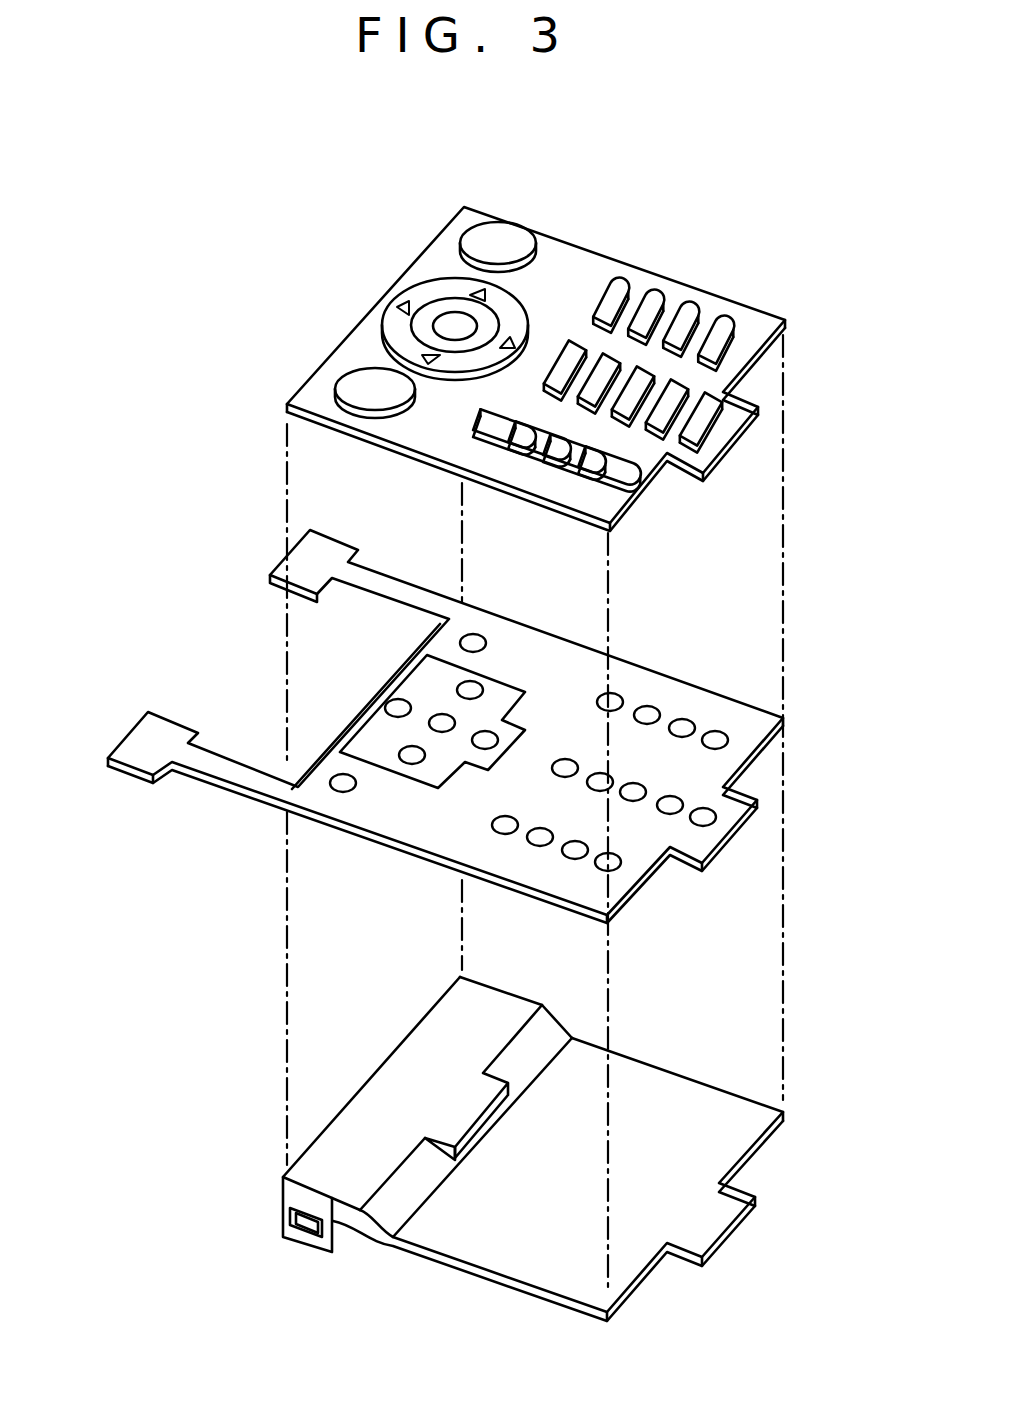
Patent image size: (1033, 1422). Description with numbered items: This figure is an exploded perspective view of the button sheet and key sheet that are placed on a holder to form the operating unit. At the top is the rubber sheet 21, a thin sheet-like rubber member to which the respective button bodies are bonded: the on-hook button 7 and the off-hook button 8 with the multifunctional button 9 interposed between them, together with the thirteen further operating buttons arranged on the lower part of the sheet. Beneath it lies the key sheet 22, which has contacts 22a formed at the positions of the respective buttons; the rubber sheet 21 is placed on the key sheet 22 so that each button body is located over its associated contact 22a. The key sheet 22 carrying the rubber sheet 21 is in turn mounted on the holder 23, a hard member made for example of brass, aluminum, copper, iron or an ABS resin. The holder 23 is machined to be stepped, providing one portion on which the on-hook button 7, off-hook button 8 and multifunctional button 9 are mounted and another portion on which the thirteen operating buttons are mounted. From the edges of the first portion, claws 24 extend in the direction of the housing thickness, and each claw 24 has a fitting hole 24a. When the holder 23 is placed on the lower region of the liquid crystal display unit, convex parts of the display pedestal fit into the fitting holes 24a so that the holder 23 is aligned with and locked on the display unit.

The on-hook button 7 is at (502, 238).
The off-hook button 8 is at (353, 384).
The multifunctional button 9 is at (405, 286).
The rubber sheet 21 is at (585, 262).
The key sheet 22 is at (445, 726).
The contacts 22a is at (617, 692).
The holder 23 is at (501, 1177).
The claws 24 is at (396, 1155).
The fitting hole 24a is at (304, 1227).